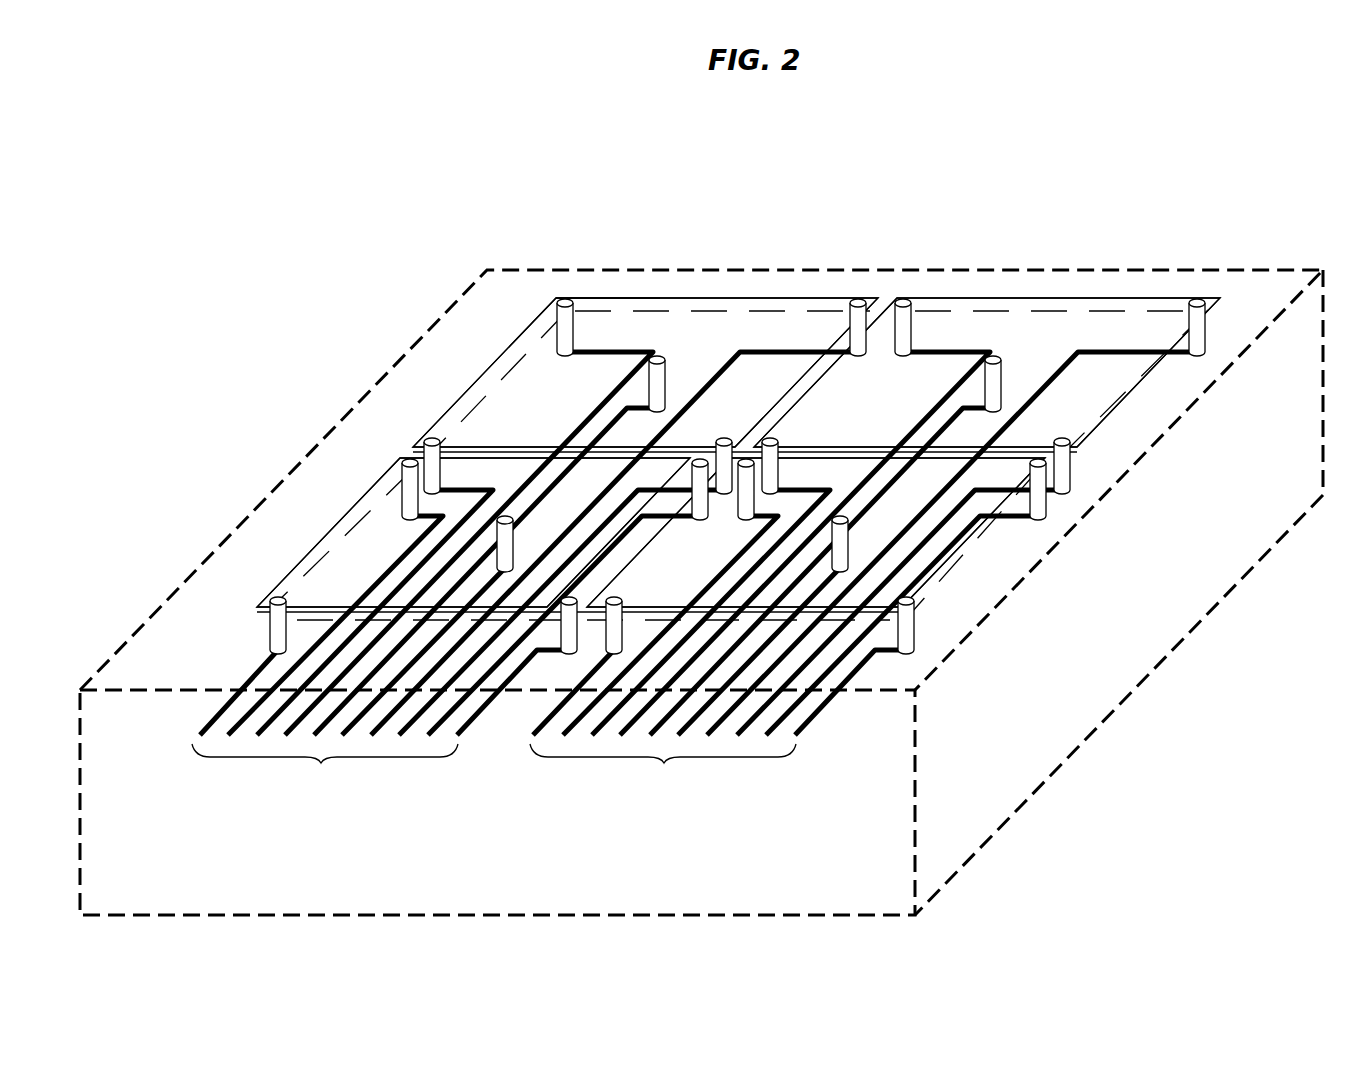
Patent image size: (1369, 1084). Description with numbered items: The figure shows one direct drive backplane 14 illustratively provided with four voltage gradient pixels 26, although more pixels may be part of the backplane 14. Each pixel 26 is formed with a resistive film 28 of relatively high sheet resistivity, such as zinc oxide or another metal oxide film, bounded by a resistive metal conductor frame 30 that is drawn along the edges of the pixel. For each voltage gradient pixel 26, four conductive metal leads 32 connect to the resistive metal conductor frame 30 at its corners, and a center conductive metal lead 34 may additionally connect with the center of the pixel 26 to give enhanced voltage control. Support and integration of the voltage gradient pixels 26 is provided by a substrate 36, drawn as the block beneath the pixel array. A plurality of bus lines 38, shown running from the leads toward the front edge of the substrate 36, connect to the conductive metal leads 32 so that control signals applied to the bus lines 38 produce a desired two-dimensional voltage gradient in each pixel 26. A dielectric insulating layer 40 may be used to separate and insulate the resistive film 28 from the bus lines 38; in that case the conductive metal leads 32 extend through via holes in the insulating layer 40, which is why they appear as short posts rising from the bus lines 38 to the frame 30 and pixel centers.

The direct drive backplane 14 is at (701, 495).
The voltage gradient pixel 26 is at (940, 290).
The resistive film 28 is at (706, 348).
The resistive metal conductor frame 30 is at (700, 308).
The conductive metal lead 32 is at (278, 630).
The center conductive metal lead 34 is at (652, 385).
The substrate 36 is at (526, 895).
The bus lines 38 is at (694, 574).
The dielectric insulating layer 40 is at (597, 298).